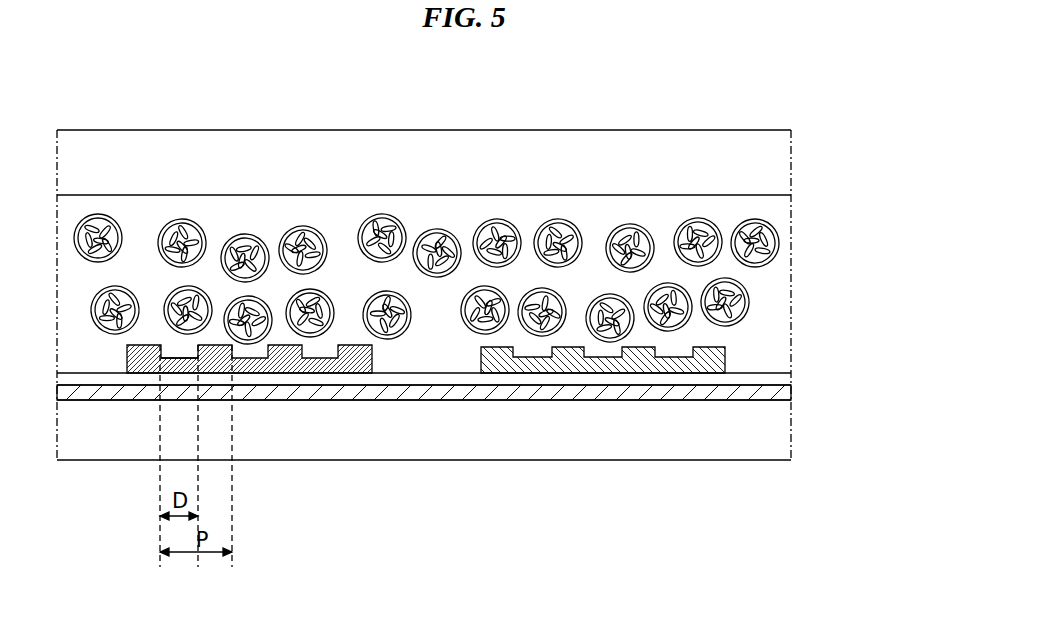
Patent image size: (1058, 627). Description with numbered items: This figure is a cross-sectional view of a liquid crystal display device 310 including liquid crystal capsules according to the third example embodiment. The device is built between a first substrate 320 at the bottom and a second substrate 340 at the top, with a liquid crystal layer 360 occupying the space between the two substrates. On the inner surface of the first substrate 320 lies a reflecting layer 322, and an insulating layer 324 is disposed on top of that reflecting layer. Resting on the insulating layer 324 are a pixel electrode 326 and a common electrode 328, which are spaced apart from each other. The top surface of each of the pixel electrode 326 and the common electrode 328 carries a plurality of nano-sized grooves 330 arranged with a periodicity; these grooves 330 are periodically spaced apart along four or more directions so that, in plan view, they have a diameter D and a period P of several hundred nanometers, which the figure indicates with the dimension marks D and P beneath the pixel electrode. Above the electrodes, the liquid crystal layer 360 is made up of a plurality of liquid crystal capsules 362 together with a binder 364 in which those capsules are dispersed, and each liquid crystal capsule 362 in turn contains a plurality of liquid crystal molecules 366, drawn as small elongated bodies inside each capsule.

The liquid crystal display device 310 is at (401, 70).
The first substrate 320 is at (782, 430).
The reflecting layer 322 is at (785, 390).
The insulating layer 324 is at (782, 377).
The pixel electrode 326 is at (290, 363).
The common electrode 328 is at (571, 363).
The grooves 330 is at (330, 357).
The second substrate 340 is at (782, 152).
The liquid crystal layer 360 is at (893, 245).
The liquid crystal capsules 362 is at (809, 234).
The binder 364 is at (778, 287).
The liquid crystal molecules 366 is at (773, 218).